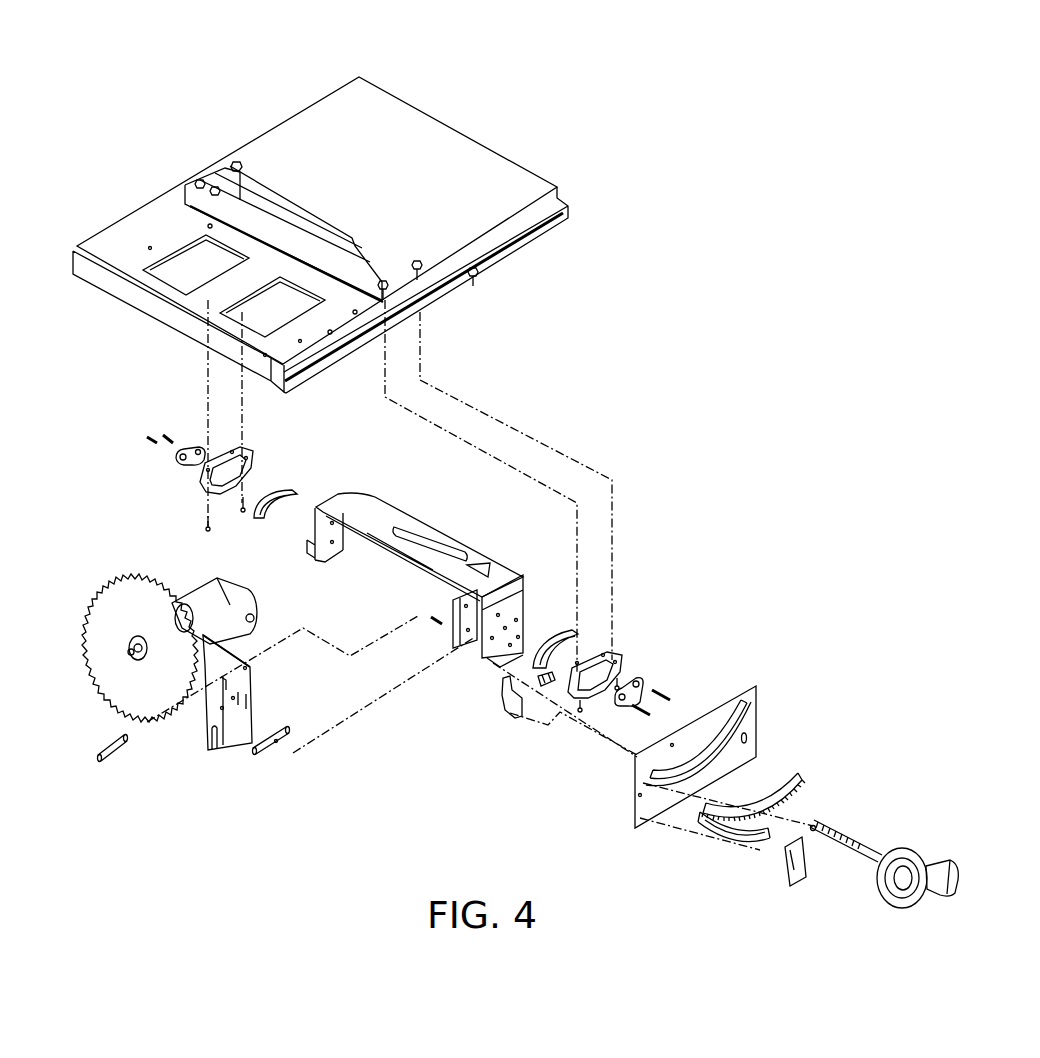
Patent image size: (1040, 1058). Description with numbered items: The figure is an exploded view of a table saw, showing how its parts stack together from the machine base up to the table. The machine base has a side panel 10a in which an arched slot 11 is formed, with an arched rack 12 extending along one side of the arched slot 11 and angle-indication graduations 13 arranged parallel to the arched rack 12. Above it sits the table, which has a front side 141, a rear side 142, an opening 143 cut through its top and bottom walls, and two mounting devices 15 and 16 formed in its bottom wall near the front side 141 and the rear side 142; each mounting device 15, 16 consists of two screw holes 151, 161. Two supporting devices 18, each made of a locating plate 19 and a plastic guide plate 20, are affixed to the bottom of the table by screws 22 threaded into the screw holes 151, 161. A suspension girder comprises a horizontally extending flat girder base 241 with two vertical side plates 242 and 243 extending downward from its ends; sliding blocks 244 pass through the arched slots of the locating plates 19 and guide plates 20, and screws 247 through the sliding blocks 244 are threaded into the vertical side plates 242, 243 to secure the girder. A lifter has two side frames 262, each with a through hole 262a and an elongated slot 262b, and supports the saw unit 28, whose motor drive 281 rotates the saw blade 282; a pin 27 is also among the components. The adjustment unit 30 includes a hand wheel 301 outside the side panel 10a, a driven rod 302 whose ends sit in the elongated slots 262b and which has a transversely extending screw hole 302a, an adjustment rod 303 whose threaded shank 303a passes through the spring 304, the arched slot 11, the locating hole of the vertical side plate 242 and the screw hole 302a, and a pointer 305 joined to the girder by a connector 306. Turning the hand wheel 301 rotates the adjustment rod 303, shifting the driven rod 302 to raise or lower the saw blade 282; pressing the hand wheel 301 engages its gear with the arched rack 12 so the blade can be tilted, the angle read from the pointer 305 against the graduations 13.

The side panel 10a is at (657, 817).
The arched slot 11 is at (748, 717).
The arched rack 12 is at (792, 780).
The angle-indication graduations 13 is at (733, 833).
The mounting device 15 is at (557, 323).
The mounting device 16 is at (108, 146).
The supporting device 18 is at (377, 457).
The locating plate 19 is at (255, 458).
The guide plate 20 is at (293, 492).
The screw 22 is at (207, 527).
The pin 27 is at (108, 743).
The saw unit 28 is at (98, 520).
The adjustment unit 30 is at (1037, 813).
The front side 141 is at (523, 248).
The rear side 142 is at (248, 140).
The opening 143 is at (310, 237).
The screw hole 151 is at (452, 287).
The screw hole 161 is at (235, 165).
The horizontally extending flat girder base 241 is at (415, 525).
The vertical side plate 242 is at (517, 597).
The vertical side plate 243 is at (327, 537).
The sliding block 244 is at (177, 458).
The screw 247 is at (163, 437).
The side frame 262 is at (253, 685).
The through hole 262a is at (221, 680).
The elongated slot 262b is at (213, 745).
The motor drive 281 is at (205, 597).
The saw blade 282 is at (92, 597).
The hand wheel 301 is at (928, 855).
The driven rod 302 is at (257, 757).
The transversely extending screw hole 302a is at (277, 742).
The adjustment rod 303 is at (880, 848).
The threaded shank 303a is at (845, 853).
The spring 304 is at (547, 687).
The pointer 305 is at (813, 828).
The connector 306 is at (507, 697).